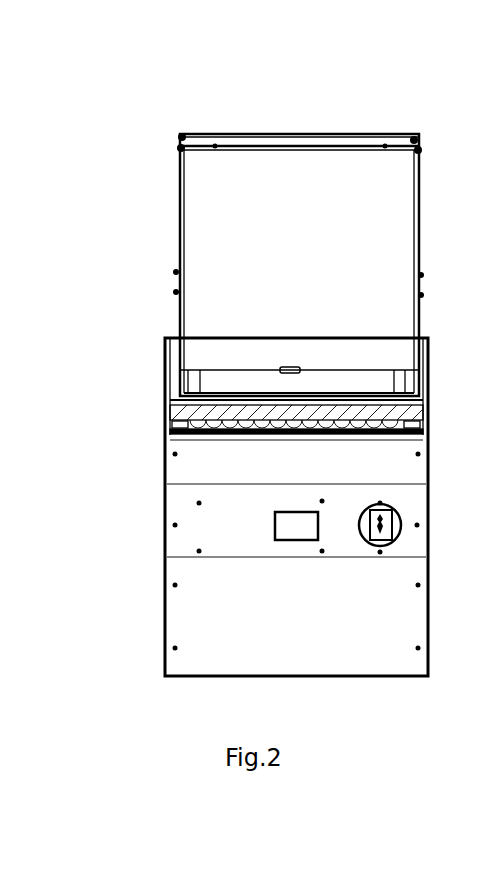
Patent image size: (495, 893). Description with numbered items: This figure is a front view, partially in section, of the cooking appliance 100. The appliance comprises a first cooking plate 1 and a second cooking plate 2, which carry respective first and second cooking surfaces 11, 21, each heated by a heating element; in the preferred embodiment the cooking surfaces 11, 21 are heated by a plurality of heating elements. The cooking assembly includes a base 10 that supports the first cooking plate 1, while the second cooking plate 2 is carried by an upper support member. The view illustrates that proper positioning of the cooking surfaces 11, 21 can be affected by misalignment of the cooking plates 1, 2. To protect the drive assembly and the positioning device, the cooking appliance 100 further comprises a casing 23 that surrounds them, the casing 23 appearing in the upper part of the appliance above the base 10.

The cooking appliance 100 is at (135, 134).
The base 10 is at (228, 626).
The first cooking plate 1 is at (283, 410).
The first cooking surface 11 is at (185, 410).
The casing 23 is at (335, 200).
The second cooking surface 21 is at (203, 395).
The second cooking plate 2 is at (212, 393).